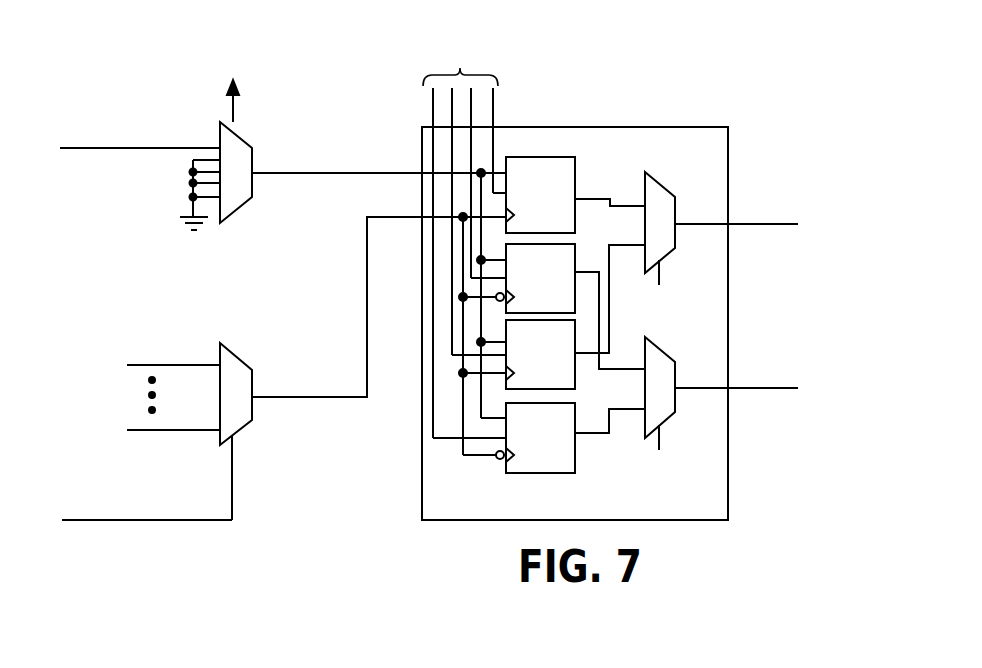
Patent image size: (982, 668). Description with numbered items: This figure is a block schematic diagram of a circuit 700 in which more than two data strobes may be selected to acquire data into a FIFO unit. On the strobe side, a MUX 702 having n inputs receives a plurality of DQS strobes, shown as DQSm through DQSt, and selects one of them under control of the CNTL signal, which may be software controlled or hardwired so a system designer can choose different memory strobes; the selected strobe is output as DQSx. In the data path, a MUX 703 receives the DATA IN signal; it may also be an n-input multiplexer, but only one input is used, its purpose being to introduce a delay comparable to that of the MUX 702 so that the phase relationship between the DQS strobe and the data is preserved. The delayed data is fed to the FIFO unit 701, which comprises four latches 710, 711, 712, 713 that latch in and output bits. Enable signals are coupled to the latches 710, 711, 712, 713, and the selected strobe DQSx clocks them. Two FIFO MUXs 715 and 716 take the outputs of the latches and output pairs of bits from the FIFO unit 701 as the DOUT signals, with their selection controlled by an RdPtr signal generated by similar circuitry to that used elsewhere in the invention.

The circuit 700 is at (701, 49).
The FIFO unit 701 is at (603, 126).
The MUX 702 is at (243, 424).
The MUX 703 is at (240, 126).
The latch 710 is at (575, 218).
The latch 711 is at (575, 293).
The latch 712 is at (575, 373).
The latch 713 is at (575, 457).
The FIFO MUX 715 is at (668, 191).
The FIFO MUX 716 is at (668, 356).